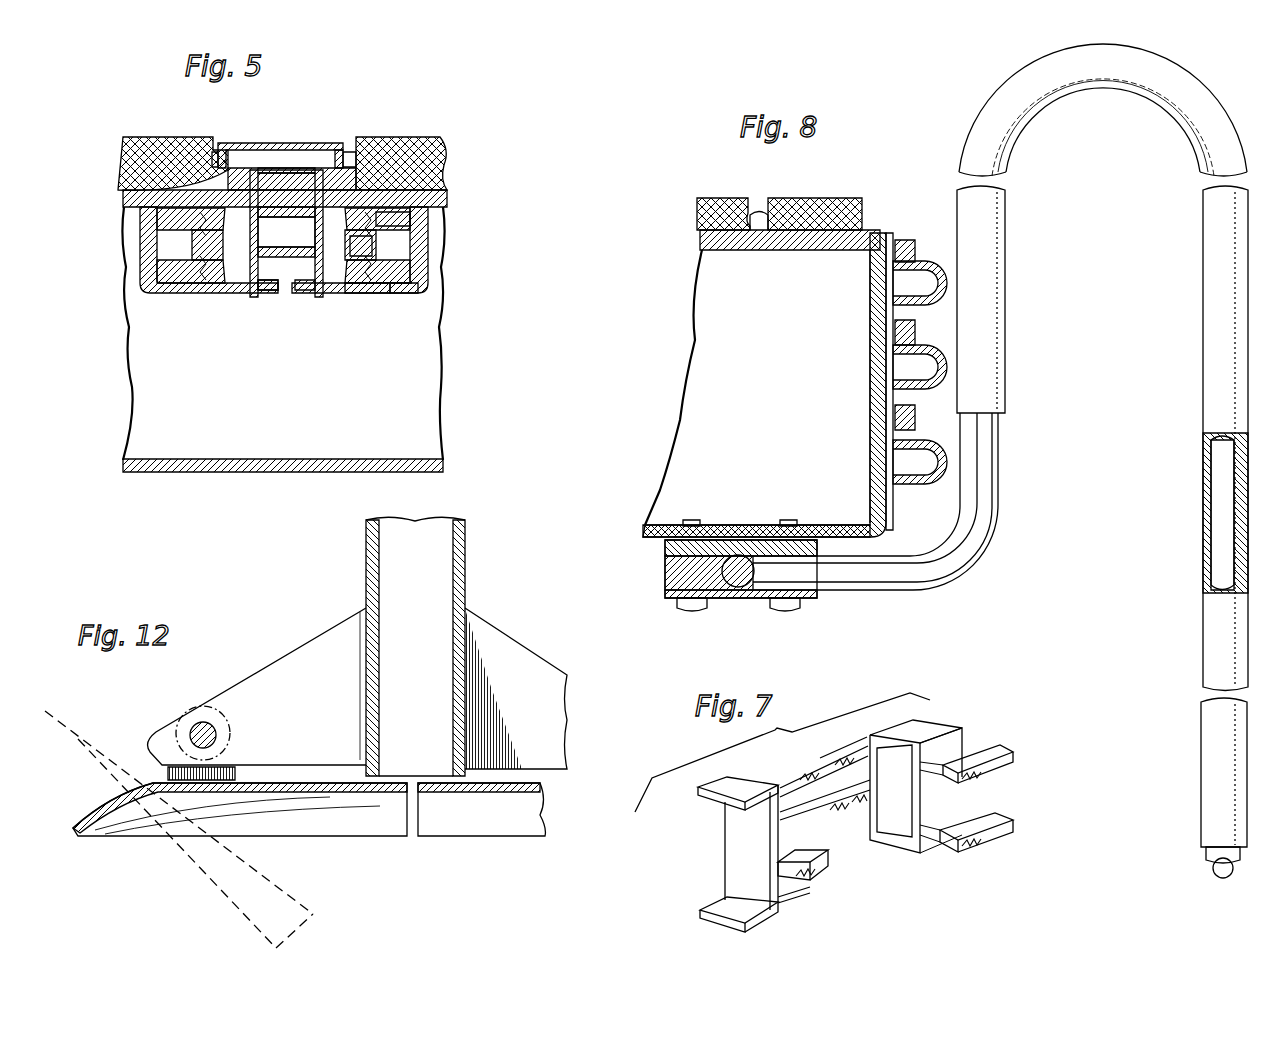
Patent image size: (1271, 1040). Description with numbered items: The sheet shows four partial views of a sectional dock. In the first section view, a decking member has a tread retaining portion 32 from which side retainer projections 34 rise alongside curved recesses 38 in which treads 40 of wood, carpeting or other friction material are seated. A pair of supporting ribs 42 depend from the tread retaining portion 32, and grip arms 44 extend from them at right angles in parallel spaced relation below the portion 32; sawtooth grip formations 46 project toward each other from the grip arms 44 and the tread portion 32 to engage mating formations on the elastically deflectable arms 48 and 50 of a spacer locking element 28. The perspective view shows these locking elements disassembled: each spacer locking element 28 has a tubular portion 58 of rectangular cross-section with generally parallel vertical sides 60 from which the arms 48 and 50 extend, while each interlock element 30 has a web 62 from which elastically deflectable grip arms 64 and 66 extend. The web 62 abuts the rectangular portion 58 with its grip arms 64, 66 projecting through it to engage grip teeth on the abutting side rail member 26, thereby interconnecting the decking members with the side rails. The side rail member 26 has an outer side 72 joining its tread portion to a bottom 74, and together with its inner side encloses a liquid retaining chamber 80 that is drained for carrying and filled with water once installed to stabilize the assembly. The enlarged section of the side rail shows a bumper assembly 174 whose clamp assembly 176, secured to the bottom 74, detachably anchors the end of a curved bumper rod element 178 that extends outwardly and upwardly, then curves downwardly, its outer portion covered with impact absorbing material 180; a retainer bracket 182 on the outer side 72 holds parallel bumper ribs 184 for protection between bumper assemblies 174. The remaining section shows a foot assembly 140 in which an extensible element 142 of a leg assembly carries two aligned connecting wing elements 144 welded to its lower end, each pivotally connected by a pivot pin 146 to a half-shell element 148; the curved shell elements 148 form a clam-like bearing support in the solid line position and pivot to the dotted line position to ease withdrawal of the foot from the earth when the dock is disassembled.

In FIG. 5, the side rail member 26 is at (450, 360).
In FIG. 8, the side rail member 26 is at (651, 461).
In FIG. 5, the spacer locking element 28 is at (300, 160).
In FIG. 7, the spacer locking element 28 is at (948, 706).
In FIG. 5, the interlock element 30 is at (270, 198).
In FIG. 7, the interlock element 30 is at (799, 905).
In FIG. 5, the tread retaining portion 32 is at (443, 200).
In FIG. 5, the side retainer projections 34 is at (345, 160).
In FIG. 5, the curved recesses 38 is at (440, 167).
In FIG. 5, the treads 40 is at (408, 145).
In FIG. 5, the supporting ribs 42 is at (422, 242).
In FIG. 5, the grip arms 44 is at (365, 287).
In FIG. 5, the sawtooth grip formations 46 is at (403, 287).
In FIG. 5, the elastically deflectable arm 48 is at (383, 262).
In FIG. 7, the elastically deflectable arm 48 is at (987, 823).
In FIG. 5, the elastically deflectable arm 50 is at (427, 223).
In FIG. 7, the elastically deflectable arm 50 is at (1003, 770).
In FIG. 7, the tubular portion 58 is at (937, 732).
In FIG. 7, the vertical sides 60 is at (930, 810).
In FIG. 7, the web 62 is at (780, 843).
In FIG. 5, the elastically deflectable grip arm 64 is at (263, 278).
In FIG. 7, the elastically deflectable grip arm 64 is at (804, 860).
In FIG. 5, the elastically deflectable grip arm 66 is at (286, 232).
In FIG. 7, the elastically deflectable grip arm 66 is at (813, 800).
In FIG. 8, the outer side 72 is at (872, 355).
In FIG. 5, the bottom 74 is at (243, 465).
In FIG. 8, the bottom 74 is at (742, 532).
In FIG. 5, the liquid retaining chamber 80 is at (328, 413).
In FIG. 12, the foot assembly 140 is at (235, 624).
In FIG. 12, the extensible element 142 is at (468, 554).
In FIG. 12, the connecting wing elements 144 is at (307, 663).
In FIG. 12, the pivot pin 146 is at (212, 727).
In FIG. 12, the half-shell element 148 is at (325, 785).
In FIG. 8, the bumper assembly 174 is at (1188, 621).
In FIG. 8, the clamp assembly 176 is at (660, 590).
In FIG. 8, the bumper rod element 178 is at (882, 567).
In FIG. 8, the impact absorbing material 180 is at (1208, 327).
In FIG. 8, the retainer bracket 182 is at (898, 243).
In FIG. 8, the bumper ribs 184 is at (938, 262).